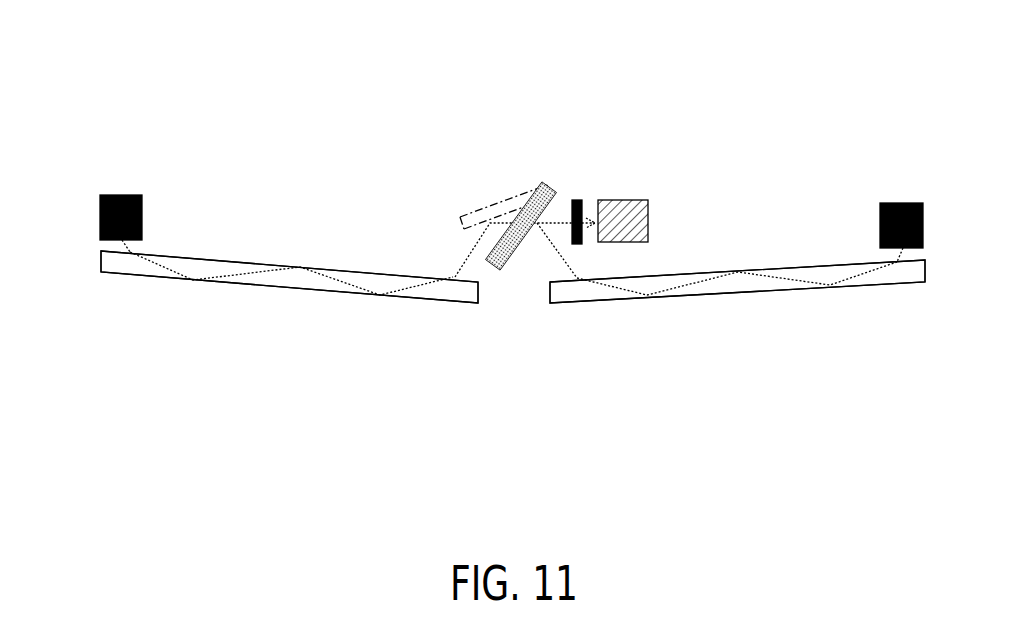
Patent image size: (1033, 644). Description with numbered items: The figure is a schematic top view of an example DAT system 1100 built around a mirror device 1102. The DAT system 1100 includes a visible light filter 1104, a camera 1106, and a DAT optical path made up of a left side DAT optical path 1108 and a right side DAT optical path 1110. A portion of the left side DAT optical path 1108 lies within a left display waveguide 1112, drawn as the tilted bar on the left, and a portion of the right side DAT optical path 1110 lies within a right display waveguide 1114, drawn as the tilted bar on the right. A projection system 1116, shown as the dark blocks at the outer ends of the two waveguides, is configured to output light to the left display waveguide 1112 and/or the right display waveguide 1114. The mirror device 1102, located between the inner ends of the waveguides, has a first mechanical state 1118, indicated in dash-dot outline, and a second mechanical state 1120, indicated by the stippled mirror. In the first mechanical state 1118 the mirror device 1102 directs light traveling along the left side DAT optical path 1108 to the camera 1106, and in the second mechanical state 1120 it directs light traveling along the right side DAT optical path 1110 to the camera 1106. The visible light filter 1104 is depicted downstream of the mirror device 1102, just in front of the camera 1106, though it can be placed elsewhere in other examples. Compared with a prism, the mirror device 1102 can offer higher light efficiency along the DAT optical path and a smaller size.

The DAT system 1100 is at (286, 91).
The mirror device 1102 is at (508, 243).
The visible light filter 1104 is at (582, 240).
The camera 1106 is at (627, 200).
The left side DAT optical path 1108 is at (340, 278).
The right side DAT optical path 1110 is at (788, 277).
The left display waveguide 1112 is at (125, 278).
The right display waveguide 1114 is at (702, 295).
The projection system 1116 is at (98, 208).
The first mechanical state 1118 is at (478, 212).
The second mechanical state 1120 is at (555, 192).